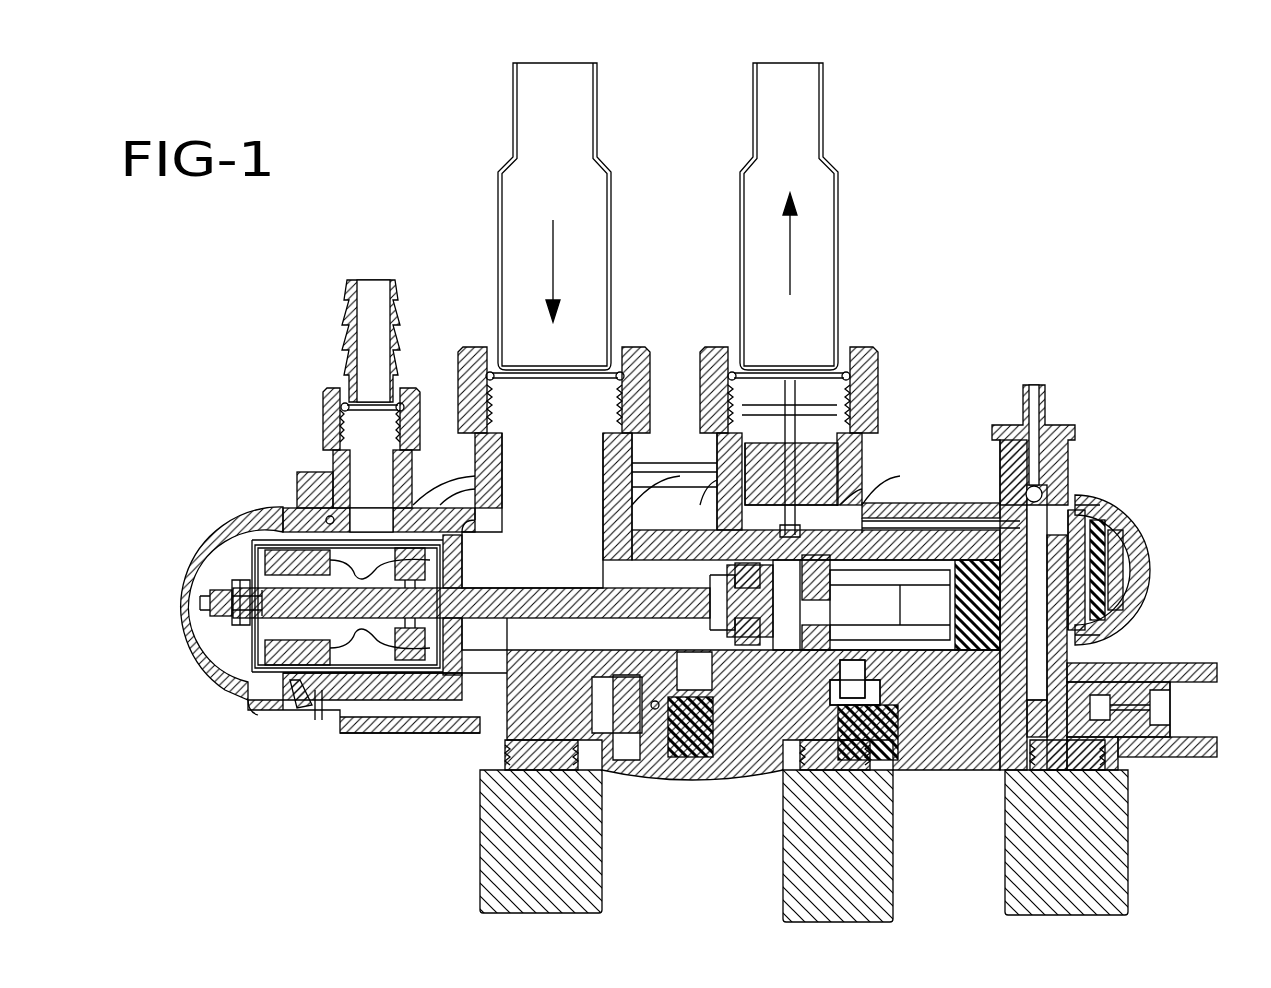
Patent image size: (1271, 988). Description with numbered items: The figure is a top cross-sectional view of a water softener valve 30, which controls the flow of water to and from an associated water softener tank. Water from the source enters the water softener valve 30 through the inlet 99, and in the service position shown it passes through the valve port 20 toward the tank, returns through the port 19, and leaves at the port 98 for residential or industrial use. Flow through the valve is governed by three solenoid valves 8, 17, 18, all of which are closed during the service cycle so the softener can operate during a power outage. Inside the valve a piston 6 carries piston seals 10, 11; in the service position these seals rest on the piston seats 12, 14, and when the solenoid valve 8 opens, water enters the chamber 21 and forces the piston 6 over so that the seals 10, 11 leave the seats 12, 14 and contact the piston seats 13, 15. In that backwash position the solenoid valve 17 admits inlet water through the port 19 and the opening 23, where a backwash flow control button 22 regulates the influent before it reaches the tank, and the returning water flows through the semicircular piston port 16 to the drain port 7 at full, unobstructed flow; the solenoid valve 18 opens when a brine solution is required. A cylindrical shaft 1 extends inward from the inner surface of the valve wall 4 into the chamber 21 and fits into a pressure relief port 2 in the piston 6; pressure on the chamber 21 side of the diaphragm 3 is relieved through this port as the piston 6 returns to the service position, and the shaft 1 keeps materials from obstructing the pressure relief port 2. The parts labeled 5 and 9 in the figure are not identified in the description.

The cylindrical shaft 1 is at (207, 600).
The pressure relief port 2 is at (248, 598).
The diaphragm 3 is at (255, 653).
The valve wall 4 is at (220, 540).
The piston plate 5 is at (355, 713).
The piston 6 is at (565, 606).
The drain port 7 is at (375, 345).
The solenoid valve 8 is at (525, 893).
The housing base 9 is at (295, 715).
The piston seal 10 is at (440, 660).
The piston seal 11 is at (745, 680).
The piston seat 12 is at (395, 680).
The piston seat 13 is at (455, 680).
The piston seat 14 is at (740, 560).
The piston seat 15 is at (793, 667).
The piston port 16 is at (322, 689).
The solenoid valve 17 is at (820, 893).
The solenoid valve 18 is at (1103, 893).
The port 19 is at (893, 607).
The valve port 20 is at (497, 572).
The chamber 21 is at (232, 655).
The backwash flow control button 22 is at (865, 700).
The opening 23 is at (850, 665).
The water softener valve 30 is at (1163, 508).
The port 98 is at (808, 313).
The inlet 99 is at (563, 408).